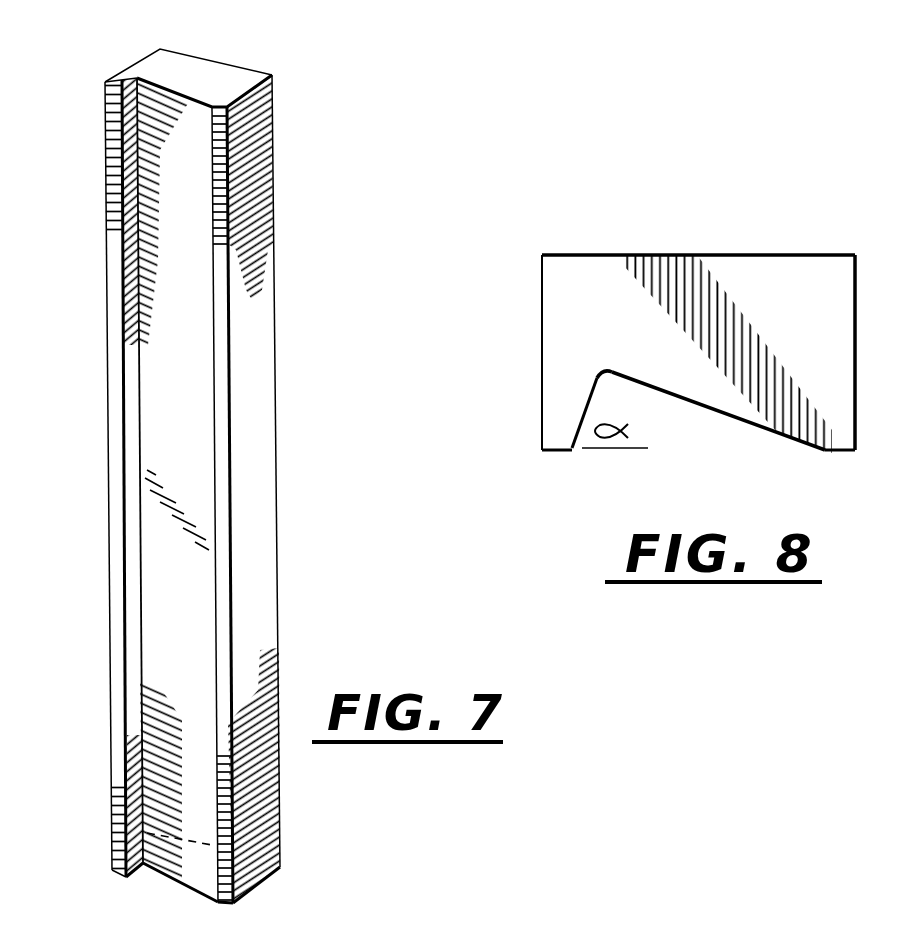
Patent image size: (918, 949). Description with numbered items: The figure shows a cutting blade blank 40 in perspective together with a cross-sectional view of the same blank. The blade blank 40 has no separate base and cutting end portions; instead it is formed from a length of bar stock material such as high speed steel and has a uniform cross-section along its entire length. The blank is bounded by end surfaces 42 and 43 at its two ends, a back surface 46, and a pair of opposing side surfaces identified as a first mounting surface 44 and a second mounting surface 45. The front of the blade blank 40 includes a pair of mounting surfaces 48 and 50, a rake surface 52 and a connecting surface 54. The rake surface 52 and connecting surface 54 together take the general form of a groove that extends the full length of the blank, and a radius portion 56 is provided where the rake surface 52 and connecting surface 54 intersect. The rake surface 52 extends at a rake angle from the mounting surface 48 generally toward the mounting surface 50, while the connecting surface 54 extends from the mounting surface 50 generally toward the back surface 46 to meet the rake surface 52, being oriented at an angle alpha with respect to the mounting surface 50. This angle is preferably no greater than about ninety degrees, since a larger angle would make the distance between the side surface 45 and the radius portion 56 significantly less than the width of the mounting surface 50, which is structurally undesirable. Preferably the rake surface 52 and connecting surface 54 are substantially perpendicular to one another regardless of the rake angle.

In FIG. 7, the blade blank 40 is at (100, 375).
In FIG. 7, the end surface 42 is at (222, 80).
In FIG. 7, the end surface 43 is at (247, 873).
In FIG. 7, the first mounting surface 44 is at (262, 563).
In FIG. 8, the first mounting surface 44 is at (860, 268).
In FIG. 8, the second mounting surface 45 is at (542, 328).
In FIG. 8, the back surface 46 is at (681, 255).
In FIG. 7, the mounting surface 48 is at (222, 473).
In FIG. 8, the mounting surface 48 is at (842, 450).
In FIG. 7, the mounting surface 50 is at (115, 521).
In FIG. 8, the mounting surface 50 is at (557, 452).
In FIG. 7, the rake surface 52 is at (195, 330).
In FIG. 8, the rake surface 52 is at (752, 428).
In FIG. 7, the connecting surface 54 is at (131, 230).
In FIG. 8, the connecting surface 54 is at (596, 388).
In FIG. 8, the radius portion 56 is at (612, 376).